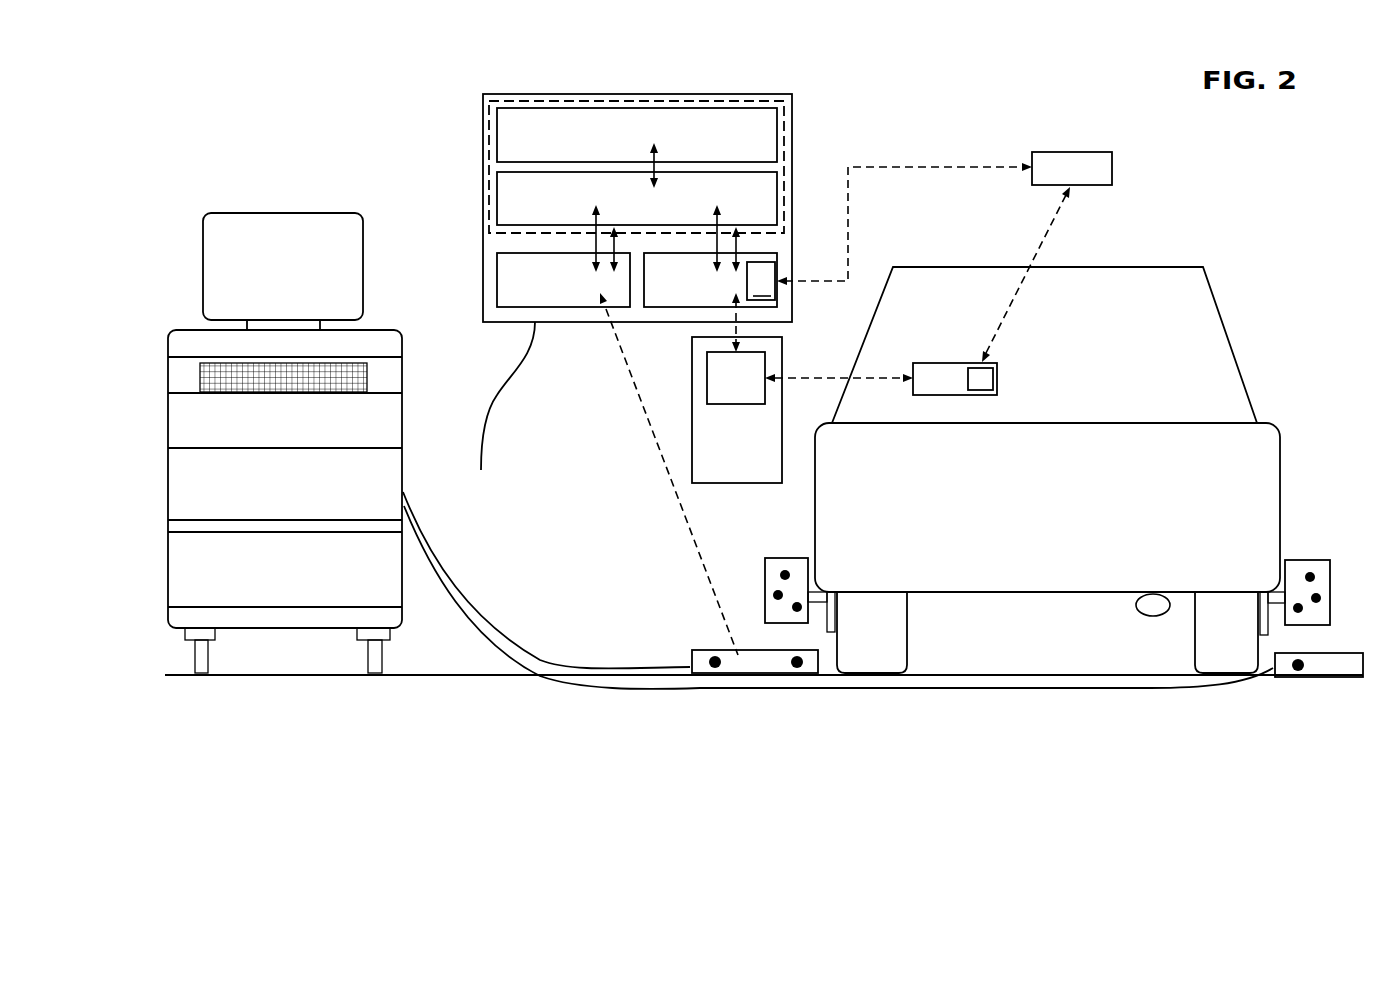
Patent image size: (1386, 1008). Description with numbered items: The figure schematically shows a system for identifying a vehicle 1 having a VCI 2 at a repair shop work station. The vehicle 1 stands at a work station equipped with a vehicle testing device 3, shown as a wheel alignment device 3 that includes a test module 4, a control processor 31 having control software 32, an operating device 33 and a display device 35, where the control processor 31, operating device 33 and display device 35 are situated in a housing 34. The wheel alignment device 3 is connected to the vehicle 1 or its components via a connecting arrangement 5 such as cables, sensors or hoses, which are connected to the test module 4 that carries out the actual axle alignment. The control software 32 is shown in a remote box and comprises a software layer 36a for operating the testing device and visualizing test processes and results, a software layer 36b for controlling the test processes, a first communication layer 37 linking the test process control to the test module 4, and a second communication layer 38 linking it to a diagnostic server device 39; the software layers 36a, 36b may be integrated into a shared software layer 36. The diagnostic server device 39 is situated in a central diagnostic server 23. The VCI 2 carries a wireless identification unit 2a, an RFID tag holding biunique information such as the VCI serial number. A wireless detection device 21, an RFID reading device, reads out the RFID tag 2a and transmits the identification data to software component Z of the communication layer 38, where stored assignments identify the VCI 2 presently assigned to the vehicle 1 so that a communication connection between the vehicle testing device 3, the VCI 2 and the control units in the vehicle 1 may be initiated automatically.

The vehicle 1 is at (1047, 423).
The VCI 2 is at (945, 372).
The wireless identification unit 2a is at (983, 378).
The vehicle testing device 3 is at (243, 501).
The test module 4 is at (742, 660).
The connecting arrangement 5 is at (490, 640).
The wireless detection device 21 is at (1072, 150).
The central diagnostic server 23 is at (716, 410).
The control processor 31 is at (189, 487).
The control software 32 is at (402, 490).
The operating device 33 is at (200, 377).
The housing 34 is at (168, 342).
The display device 35 is at (223, 270).
The shared software layer 36 is at (702, 223).
The software layer 36a is at (578, 150).
The software layer 36b is at (578, 213).
The first communication layer 37 is at (578, 295).
The second communication layer 38 is at (708, 295).
The diagnostic server device 39 is at (741, 390).